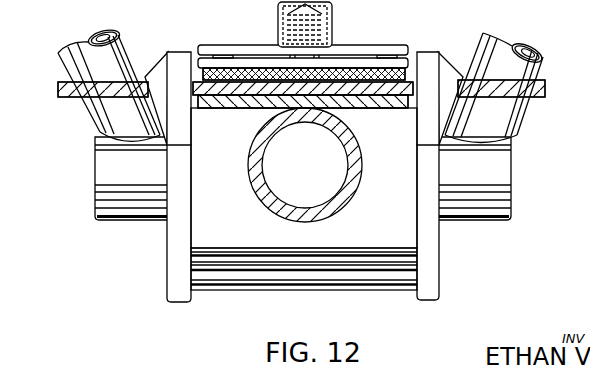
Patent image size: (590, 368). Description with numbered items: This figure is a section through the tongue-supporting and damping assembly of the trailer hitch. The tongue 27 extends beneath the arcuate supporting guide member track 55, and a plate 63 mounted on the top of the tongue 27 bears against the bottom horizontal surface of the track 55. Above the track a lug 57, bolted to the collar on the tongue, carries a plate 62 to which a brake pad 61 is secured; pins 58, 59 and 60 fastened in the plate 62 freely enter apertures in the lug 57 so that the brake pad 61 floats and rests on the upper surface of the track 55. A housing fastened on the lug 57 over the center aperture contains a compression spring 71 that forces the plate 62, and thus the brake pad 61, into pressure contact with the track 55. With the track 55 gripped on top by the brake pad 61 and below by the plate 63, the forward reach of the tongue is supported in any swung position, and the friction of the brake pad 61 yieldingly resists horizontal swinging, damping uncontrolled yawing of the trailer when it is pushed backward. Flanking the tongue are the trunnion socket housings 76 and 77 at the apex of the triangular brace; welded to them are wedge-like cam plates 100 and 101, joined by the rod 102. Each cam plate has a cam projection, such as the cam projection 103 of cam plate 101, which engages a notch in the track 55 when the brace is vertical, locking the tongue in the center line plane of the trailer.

The tongue 27 is at (258, 208).
The track 55 is at (252, 88).
The lug 57 is at (336, 48).
The pin 58 is at (220, 48).
The pin 59 is at (388, 48).
The pin 60 is at (292, 53).
The brake pad 61 is at (200, 75).
The plate 62 is at (405, 68).
The plate 63 is at (373, 100).
The compression spring 71 is at (330, 20).
The housing 76 is at (117, 222).
The housing 77 is at (483, 222).
The cam plate 100 is at (183, 277).
The cam plate 101 is at (440, 277).
The rod 102 is at (300, 285).
The cam projection 103 is at (160, 98).